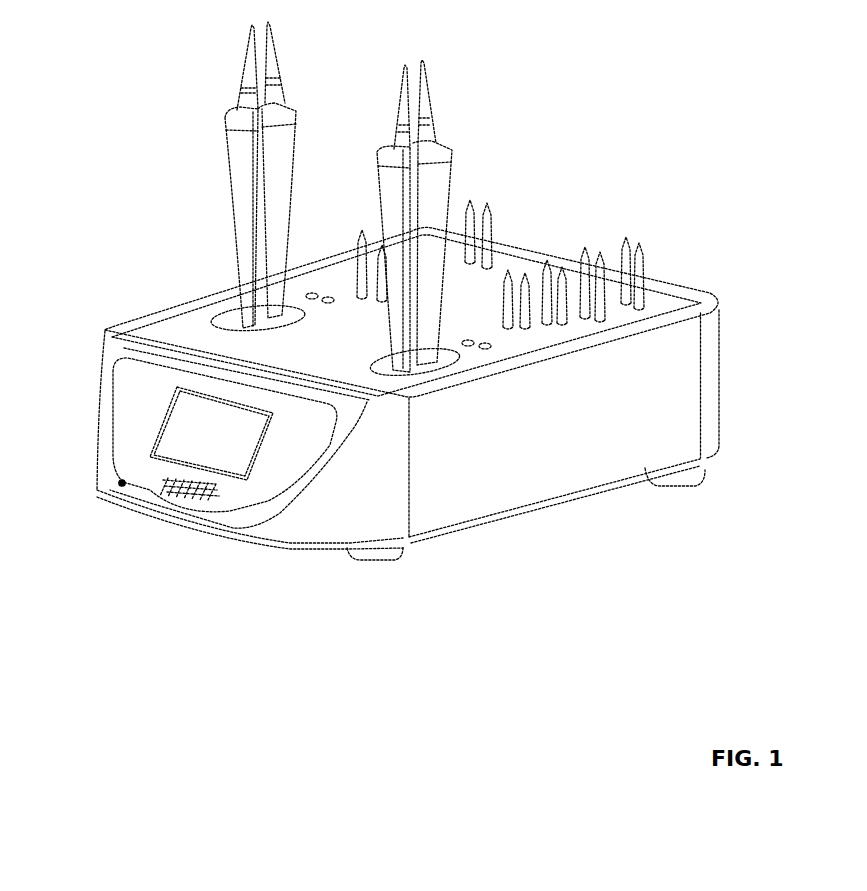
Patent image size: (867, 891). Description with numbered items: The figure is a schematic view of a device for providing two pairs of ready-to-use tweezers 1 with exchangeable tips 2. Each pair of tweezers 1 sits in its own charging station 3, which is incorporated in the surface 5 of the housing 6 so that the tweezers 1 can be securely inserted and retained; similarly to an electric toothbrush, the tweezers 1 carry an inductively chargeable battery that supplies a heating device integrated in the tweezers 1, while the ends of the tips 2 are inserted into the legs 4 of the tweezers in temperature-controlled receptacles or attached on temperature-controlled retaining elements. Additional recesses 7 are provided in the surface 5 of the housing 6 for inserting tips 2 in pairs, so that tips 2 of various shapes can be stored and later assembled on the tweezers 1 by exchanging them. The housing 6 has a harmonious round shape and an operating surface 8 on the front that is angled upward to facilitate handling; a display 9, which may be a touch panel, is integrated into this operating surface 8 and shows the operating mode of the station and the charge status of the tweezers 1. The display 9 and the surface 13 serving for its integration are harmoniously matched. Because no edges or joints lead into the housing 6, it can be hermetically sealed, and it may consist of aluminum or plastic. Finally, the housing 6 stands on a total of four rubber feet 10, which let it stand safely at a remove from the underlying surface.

The tweezers 1 is at (226, 135).
The tips 2 is at (277, 58).
The charging station 3 is at (232, 322).
The legs 4 is at (238, 218).
The surface 5 is at (517, 262).
The housing 6 is at (97, 378).
The recesses 7 is at (308, 291).
The operating surface 8 is at (266, 482).
The display 9 is at (211, 443).
The rubber feet 10 is at (378, 562).
The surface 13 is at (122, 483).